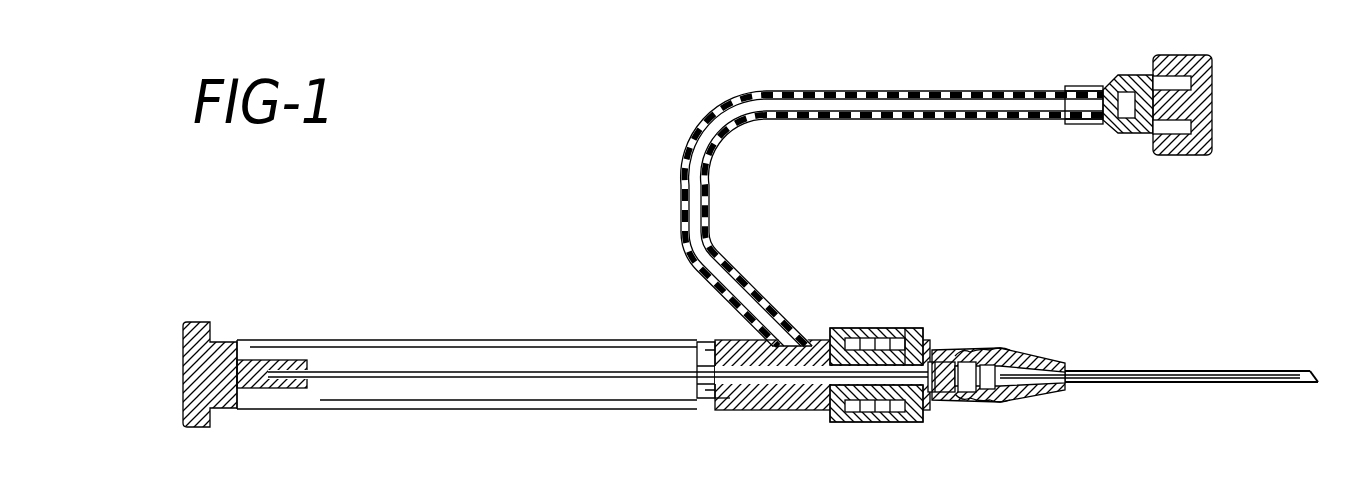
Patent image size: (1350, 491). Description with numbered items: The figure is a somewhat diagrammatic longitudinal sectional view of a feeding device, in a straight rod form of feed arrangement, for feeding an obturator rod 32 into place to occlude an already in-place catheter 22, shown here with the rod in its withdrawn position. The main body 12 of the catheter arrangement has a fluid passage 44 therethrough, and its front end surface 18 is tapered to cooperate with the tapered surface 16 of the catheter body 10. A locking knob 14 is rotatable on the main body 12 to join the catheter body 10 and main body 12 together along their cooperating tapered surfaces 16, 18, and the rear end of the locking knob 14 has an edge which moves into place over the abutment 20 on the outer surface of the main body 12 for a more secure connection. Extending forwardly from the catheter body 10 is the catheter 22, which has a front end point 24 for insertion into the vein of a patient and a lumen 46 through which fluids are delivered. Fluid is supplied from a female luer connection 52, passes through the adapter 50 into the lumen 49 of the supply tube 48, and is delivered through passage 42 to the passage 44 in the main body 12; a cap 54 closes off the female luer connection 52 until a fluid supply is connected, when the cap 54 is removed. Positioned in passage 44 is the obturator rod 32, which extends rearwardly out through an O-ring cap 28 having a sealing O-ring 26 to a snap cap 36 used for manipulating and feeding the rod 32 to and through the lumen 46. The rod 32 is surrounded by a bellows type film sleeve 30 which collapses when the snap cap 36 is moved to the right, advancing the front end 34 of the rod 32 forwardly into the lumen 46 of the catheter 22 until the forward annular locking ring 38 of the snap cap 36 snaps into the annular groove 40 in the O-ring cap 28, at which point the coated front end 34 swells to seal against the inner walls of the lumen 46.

The catheter body 10 is at (1010, 351).
The main body 12 is at (790, 411).
The locking knob 14 is at (860, 423).
The tapered surface 16 is at (905, 336).
The front end surface 18 is at (930, 352).
The abutment 20 is at (860, 329).
The catheter 22 is at (1212, 371).
The front end point 24 is at (1318, 375).
The sealing O-ring 26 is at (722, 410).
The O-ring cap 28 is at (700, 342).
The bellows type film sleeve 30 is at (498, 340).
The obturator rod 32 is at (400, 372).
The front end 34 is at (945, 351).
The snap cap 36 is at (188, 322).
The annular locking ring 38 is at (290, 360).
The annular groove 40 is at (700, 384).
The passage 42 is at (815, 340).
The fluid passage 44 is at (945, 400).
The lumen 46 is at (1150, 371).
The supply tube 48 is at (720, 252).
The lumen 49 is at (855, 104).
The adapter 50 is at (1070, 125).
The female luer connection 52 is at (1135, 134).
The cap 54 is at (1187, 156).